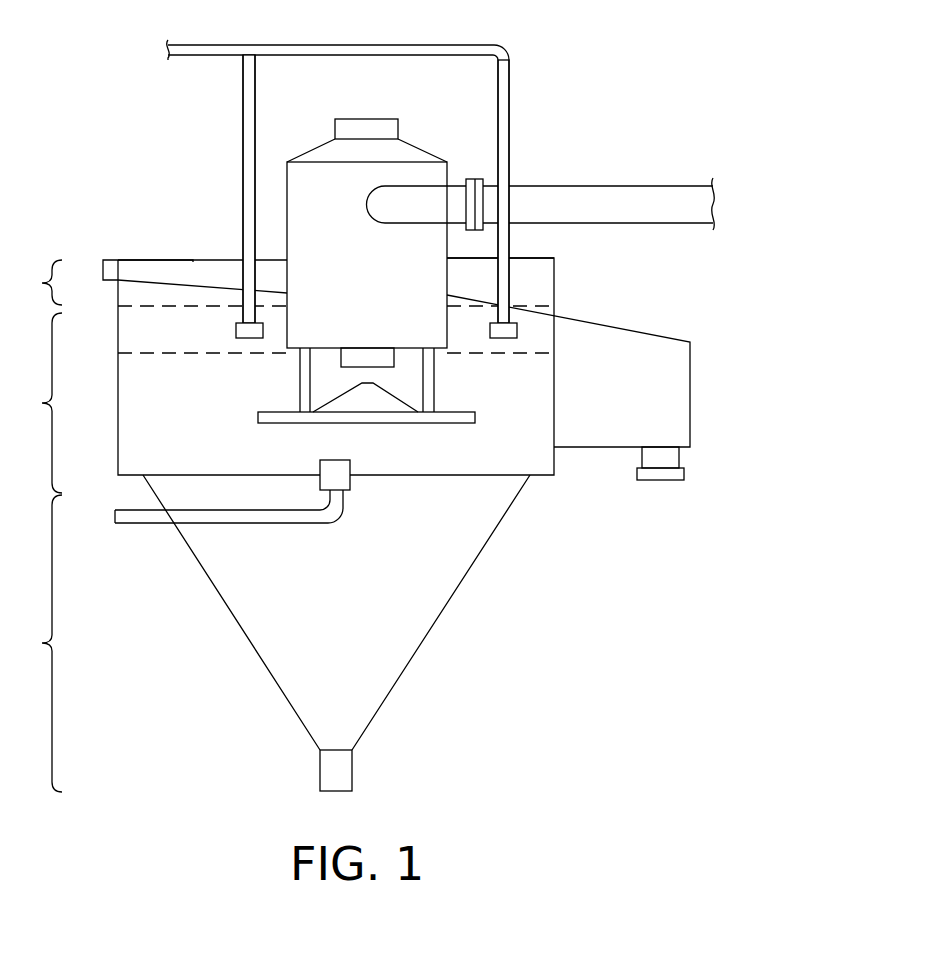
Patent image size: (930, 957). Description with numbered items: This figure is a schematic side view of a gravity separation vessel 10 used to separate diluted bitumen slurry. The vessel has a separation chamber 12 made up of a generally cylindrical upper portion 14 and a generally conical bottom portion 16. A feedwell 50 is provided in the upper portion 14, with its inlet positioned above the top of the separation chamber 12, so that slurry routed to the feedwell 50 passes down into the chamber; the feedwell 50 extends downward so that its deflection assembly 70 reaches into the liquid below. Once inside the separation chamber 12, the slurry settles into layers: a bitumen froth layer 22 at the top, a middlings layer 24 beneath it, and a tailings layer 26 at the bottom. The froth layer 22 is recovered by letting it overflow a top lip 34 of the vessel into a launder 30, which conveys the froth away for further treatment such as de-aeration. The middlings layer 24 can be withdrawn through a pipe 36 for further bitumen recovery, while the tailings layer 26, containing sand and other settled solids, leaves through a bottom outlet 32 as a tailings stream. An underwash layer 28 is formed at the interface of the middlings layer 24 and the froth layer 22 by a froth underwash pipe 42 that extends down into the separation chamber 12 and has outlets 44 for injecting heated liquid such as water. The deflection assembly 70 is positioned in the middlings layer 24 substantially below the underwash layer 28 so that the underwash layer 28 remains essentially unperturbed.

The gravity separation vessel 10 is at (648, 131).
The separation chamber 12 is at (533, 308).
The upper portion 14 is at (557, 268).
The bottom portion 16 is at (463, 578).
The bitumen froth layer 22 is at (39, 282).
The middlings layer 24 is at (36, 403).
The tailings layer 26 is at (36, 643).
The underwash layer 28 is at (145, 330).
The launder 30 is at (690, 368).
The bottom outlet 32 is at (352, 770).
The top lip 34 is at (143, 262).
The pipe 36 is at (230, 524).
The froth underwash pipe 42 is at (243, 122).
The outlets 44 is at (236, 330).
The feedwell 50 is at (413, 145).
The deflection assembly 70 is at (413, 396).